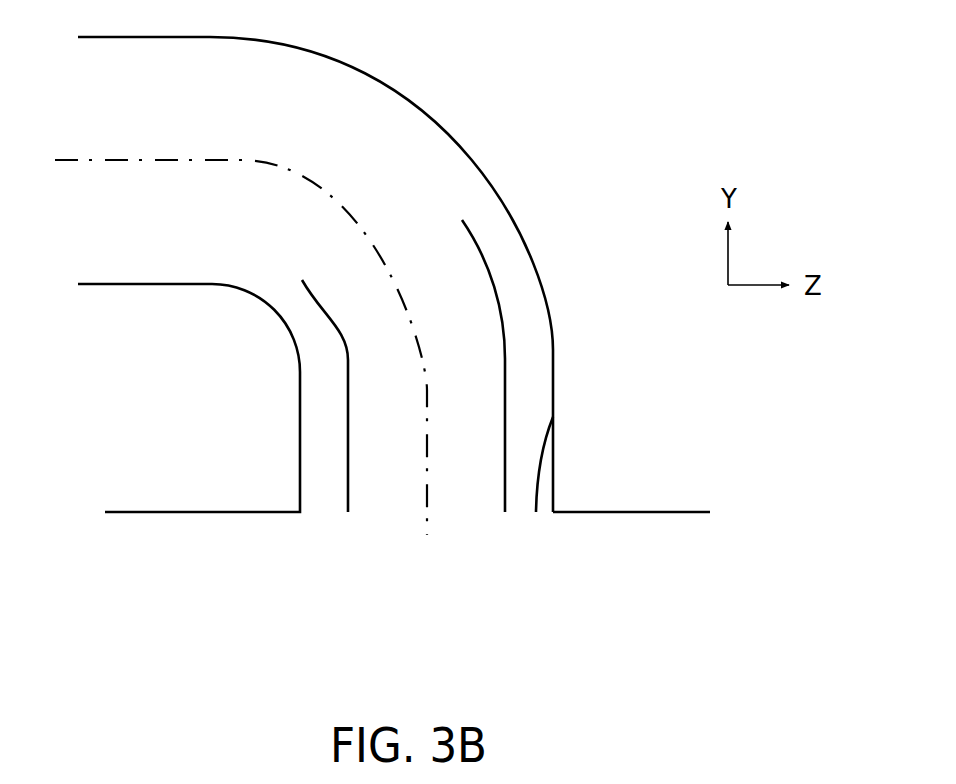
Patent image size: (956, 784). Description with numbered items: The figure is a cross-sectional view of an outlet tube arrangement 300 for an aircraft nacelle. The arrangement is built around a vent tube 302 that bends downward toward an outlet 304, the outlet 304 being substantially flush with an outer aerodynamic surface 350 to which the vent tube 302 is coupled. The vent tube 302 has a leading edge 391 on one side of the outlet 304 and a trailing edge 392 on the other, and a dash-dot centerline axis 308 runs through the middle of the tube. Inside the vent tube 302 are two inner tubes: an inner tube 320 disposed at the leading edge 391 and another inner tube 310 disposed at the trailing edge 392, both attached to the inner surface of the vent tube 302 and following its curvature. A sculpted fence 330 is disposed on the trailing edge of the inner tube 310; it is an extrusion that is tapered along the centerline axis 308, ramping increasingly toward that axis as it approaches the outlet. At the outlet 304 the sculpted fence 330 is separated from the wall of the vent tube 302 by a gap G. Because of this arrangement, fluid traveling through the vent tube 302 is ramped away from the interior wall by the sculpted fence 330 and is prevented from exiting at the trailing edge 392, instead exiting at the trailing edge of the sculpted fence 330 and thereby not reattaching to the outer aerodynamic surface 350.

The outlet tube arrangement 300 is at (622, 87).
The vent tube 302 is at (420, 105).
The outlet 304 is at (470, 516).
The centerline axis 308 is at (347, 203).
The inner tube 310 is at (483, 268).
The inner tube 320 is at (330, 313).
The sculpted fence 330 is at (540, 458).
The outer aerodynamic surface 350 is at (657, 512).
The leading edge 391 is at (299, 516).
The trailing edge 392 is at (559, 517).
The gap G is at (545, 510).